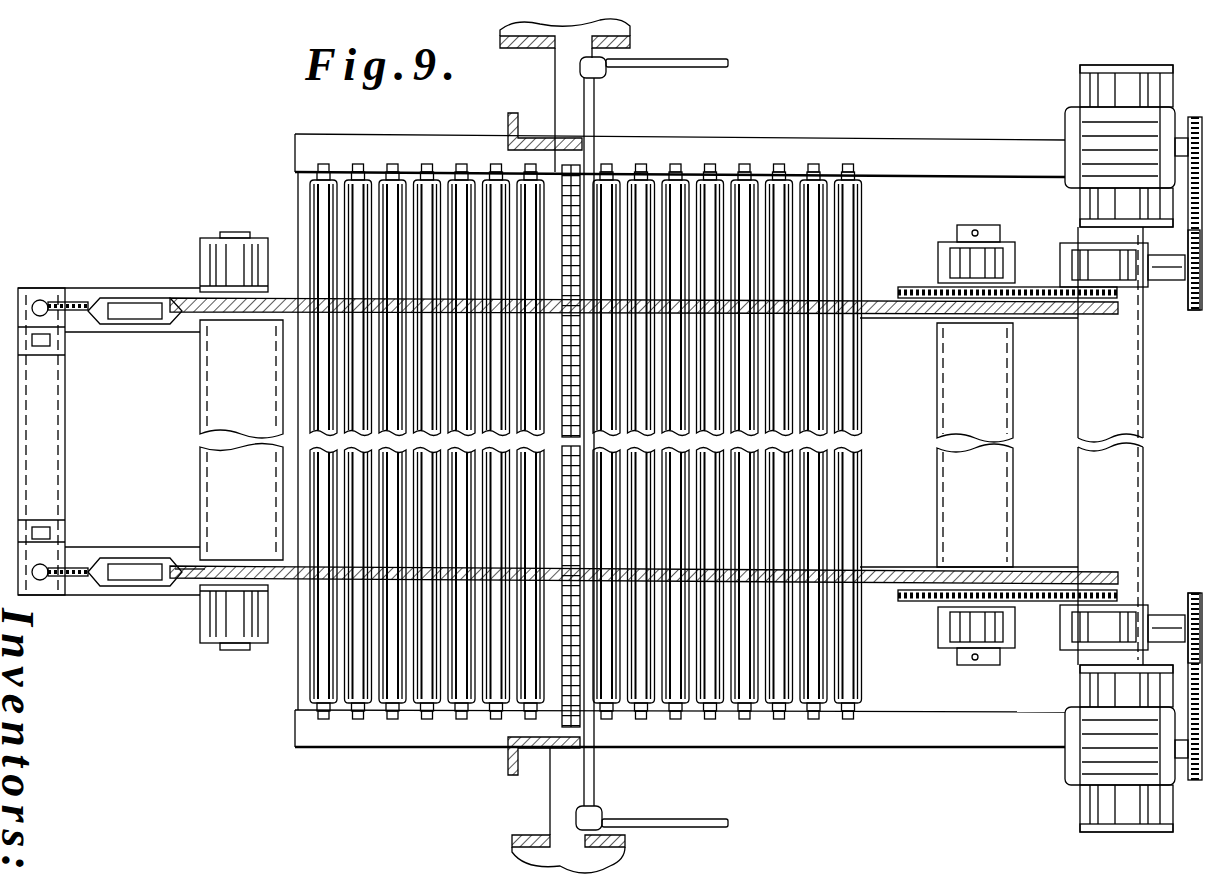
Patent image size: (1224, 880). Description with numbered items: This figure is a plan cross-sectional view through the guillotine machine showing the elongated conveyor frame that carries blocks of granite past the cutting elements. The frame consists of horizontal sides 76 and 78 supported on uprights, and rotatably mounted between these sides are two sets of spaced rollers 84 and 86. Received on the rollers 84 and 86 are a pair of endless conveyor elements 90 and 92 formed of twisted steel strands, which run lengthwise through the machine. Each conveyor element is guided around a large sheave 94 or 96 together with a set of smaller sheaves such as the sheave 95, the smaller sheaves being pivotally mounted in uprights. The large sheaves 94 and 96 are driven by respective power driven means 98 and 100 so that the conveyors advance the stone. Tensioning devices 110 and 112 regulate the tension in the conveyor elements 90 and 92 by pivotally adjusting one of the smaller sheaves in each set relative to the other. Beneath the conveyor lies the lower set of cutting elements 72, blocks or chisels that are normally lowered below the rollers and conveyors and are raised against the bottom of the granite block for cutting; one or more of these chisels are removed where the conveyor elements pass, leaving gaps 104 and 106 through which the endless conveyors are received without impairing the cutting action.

The lower set of cutting elements 72 is at (566, 705).
The horizontal side of conveyor frame 76 is at (885, 710).
The horizontal side of conveyor frame 78 is at (888, 180).
The roller 84 is at (690, 182).
The roller 86 is at (676, 724).
The endless conveyor element 90 is at (1025, 568).
The endless conveyor element 92 is at (1047, 318).
The large sheave 94 is at (1052, 572).
The smaller sheave 95 is at (190, 592).
The large sheave 96 is at (1088, 318).
The power driven means 98 is at (1068, 770).
The power driven means 100 is at (1092, 130).
The gap 104 is at (566, 290).
The gap 106 is at (566, 592).
The tensioning device 110 is at (126, 588).
The tensioning device 112 is at (122, 298).